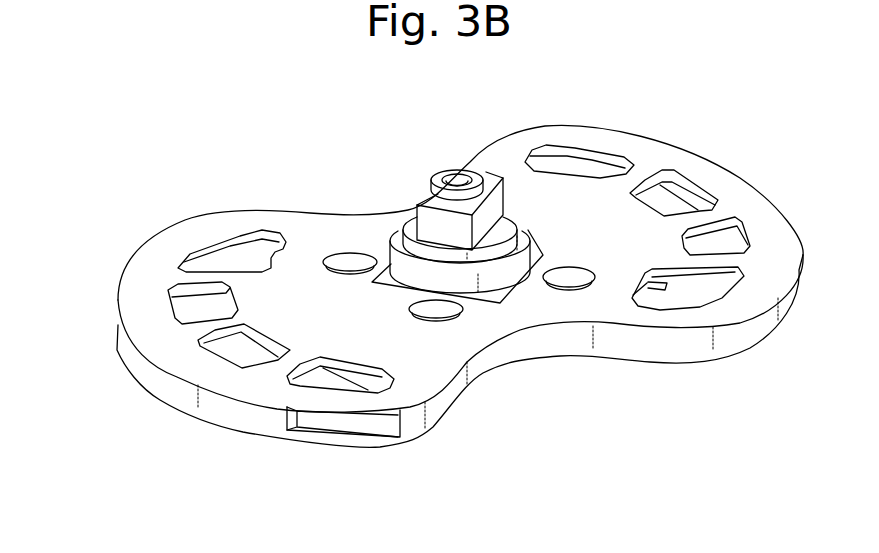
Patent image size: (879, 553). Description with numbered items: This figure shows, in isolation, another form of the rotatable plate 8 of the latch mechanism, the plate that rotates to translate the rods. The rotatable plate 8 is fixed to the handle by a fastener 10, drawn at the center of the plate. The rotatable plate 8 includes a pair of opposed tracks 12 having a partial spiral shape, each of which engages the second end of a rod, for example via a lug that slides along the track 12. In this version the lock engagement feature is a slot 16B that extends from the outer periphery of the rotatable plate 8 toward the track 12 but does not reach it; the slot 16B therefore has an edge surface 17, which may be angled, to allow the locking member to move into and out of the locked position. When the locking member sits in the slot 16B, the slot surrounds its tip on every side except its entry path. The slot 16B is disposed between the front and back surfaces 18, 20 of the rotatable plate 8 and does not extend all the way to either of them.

The rotatable plate 8 is at (617, 210).
The fastener 10 is at (427, 202).
The track 12 is at (227, 262).
The slot 16B is at (317, 453).
The edge surface 17 is at (380, 436).
The front surface 18 is at (140, 270).
The back surface 20 is at (163, 390).